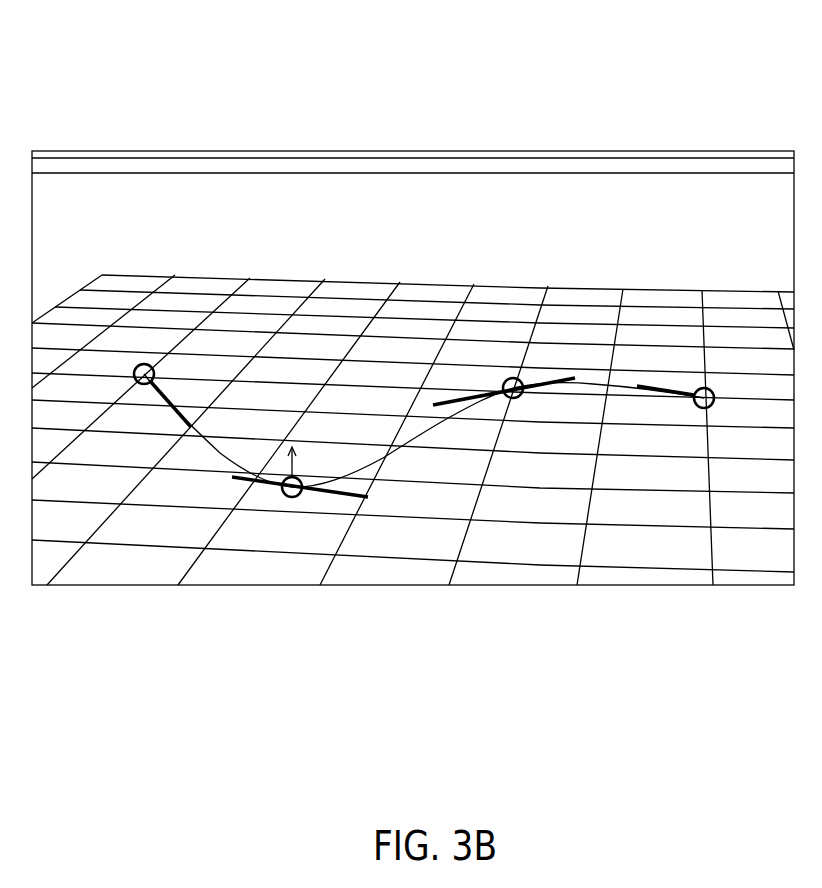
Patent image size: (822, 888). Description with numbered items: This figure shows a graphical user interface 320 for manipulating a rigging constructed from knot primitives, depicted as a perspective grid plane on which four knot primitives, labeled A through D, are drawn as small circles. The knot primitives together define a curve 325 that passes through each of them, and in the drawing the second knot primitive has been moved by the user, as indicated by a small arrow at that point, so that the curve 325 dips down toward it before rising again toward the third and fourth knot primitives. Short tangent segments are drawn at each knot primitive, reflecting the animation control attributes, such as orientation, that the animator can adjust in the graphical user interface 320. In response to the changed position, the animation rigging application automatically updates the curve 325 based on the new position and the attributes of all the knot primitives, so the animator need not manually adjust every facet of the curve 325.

The graphical user interface 320 is at (708, 47).
The curve 325 is at (418, 437).